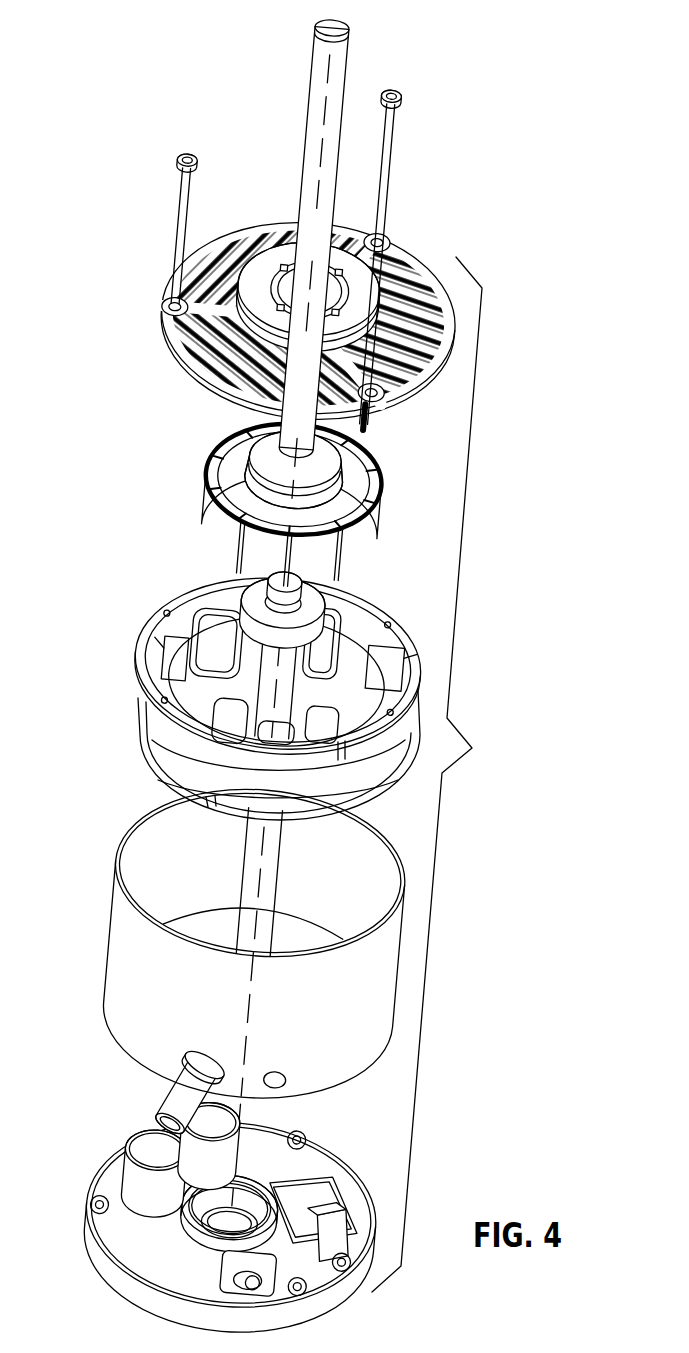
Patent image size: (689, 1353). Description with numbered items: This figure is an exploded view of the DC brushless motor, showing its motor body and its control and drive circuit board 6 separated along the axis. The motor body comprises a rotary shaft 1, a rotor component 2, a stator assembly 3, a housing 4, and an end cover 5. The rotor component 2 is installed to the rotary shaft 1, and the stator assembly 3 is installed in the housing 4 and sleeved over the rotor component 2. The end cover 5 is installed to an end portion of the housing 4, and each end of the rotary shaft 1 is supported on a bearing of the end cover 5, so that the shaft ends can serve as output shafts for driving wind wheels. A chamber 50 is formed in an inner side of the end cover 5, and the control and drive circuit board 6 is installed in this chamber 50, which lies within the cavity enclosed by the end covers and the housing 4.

The rotary shaft 1 is at (290, 443).
The rotor component 2 is at (313, 557).
The stator assembly 3 is at (173, 662).
The housing 4 is at (162, 977).
The end cover 5 is at (233, 348).
The chamber 50 is at (127, 1213).
The control and drive circuit board 6 is at (147, 1240).